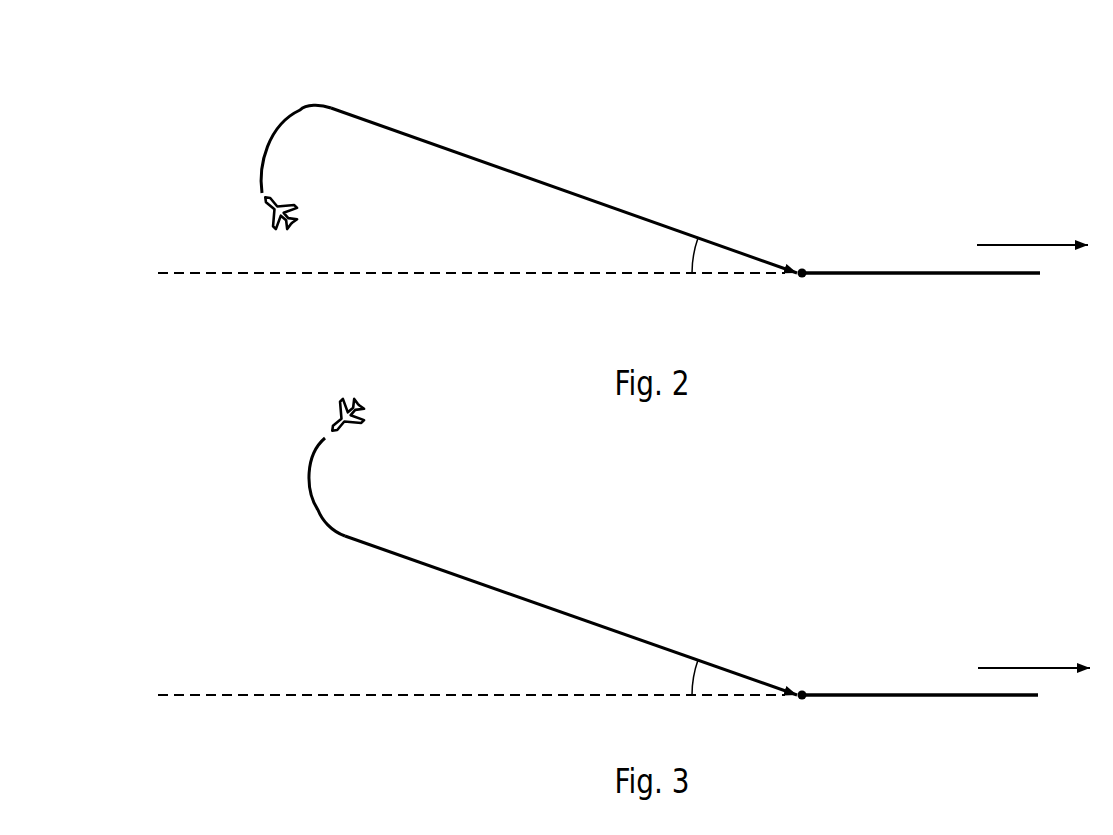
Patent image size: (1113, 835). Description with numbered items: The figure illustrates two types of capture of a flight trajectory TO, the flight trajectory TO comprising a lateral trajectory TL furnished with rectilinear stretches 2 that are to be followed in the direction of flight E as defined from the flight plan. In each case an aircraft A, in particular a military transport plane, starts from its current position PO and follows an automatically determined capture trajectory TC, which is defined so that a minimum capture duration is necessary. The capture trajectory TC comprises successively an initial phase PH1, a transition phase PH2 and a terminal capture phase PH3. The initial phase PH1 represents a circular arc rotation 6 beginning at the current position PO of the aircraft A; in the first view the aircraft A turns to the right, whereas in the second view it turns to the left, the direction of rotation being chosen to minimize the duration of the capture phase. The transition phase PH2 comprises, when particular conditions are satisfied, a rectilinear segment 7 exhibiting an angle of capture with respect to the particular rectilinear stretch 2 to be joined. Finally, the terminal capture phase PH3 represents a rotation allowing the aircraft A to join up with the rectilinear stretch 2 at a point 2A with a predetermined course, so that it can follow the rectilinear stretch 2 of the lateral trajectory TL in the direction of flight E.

In FIG. 2, the rectilinear stretch 2 is at (897, 277).
In FIG. 3, the rectilinear stretch 2 is at (897, 699).
In FIG. 2, the join-up point 2A is at (807, 282).
In FIG. 3, the join-up point 2A is at (805, 702).
In FIG. 2, the circular arc rotation 6 is at (293, 137).
In FIG. 3, the circular arc rotation 6 is at (327, 490).
In FIG. 2, the rectilinear segment 7 is at (545, 183).
In FIG. 3, the rectilinear segment 7 is at (583, 617).
In FIG. 2, the aircraft A is at (289, 208).
In FIG. 3, the aircraft A is at (358, 420).
In FIG. 2, the current position PO is at (252, 210).
In FIG. 3, the current position PO is at (317, 425).
In FIG. 2, the capture trajectory TC is at (267, 107).
In FIG. 3, the capture trajectory TC is at (297, 532).
In FIG. 2, the initial phase PH1 is at (237, 153).
In FIG. 3, the initial phase PH1 is at (297, 487).
In FIG. 2, the transition phase PH2 is at (508, 145).
In FIG. 3, the transition phase PH2 is at (537, 587).
In FIG. 2, the terminal capture phase PH3 is at (777, 258).
In FIG. 3, the terminal capture phase PH3 is at (778, 687).
In FIG. 2, the lateral trajectory TL is at (865, 257).
In FIG. 3, the lateral trajectory TL is at (867, 678).
In FIG. 2, the direction of flight E is at (1020, 245).
In FIG. 3, the direction of flight E is at (1022, 668).
In FIG. 2, the flight trajectory TO is at (152, 273).
In FIG. 3, the flight trajectory TO is at (152, 695).